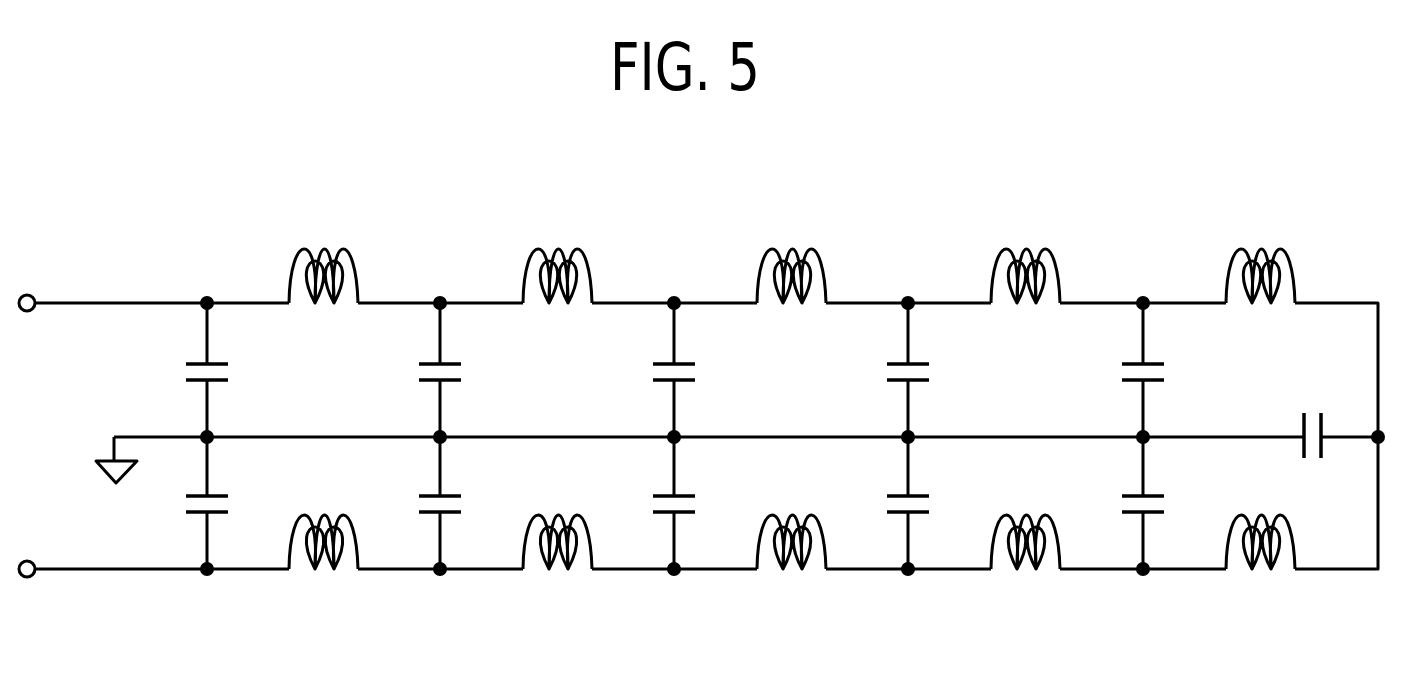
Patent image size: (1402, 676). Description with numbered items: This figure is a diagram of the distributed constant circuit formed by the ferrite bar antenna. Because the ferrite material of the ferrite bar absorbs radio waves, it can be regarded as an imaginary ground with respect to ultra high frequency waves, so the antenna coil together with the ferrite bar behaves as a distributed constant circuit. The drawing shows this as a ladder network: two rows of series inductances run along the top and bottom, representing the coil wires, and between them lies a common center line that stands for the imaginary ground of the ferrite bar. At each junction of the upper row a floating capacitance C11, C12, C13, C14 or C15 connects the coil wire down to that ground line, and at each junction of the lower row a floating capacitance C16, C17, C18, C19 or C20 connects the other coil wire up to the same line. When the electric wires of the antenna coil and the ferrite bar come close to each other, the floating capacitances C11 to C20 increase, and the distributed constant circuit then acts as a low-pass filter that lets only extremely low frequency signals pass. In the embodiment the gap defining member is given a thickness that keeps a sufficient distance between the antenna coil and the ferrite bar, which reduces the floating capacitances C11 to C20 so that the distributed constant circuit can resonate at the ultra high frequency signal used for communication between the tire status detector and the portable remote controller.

The floating capacitance C11 is at (181, 373).
The floating capacitance C12 is at (414, 373).
The floating capacitance C13 is at (648, 373).
The floating capacitance C14 is at (882, 373).
The floating capacitance C15 is at (1117, 373).
The floating capacitance C16 is at (181, 506).
The floating capacitance C17 is at (414, 506).
The floating capacitance C18 is at (648, 506).
The floating capacitance C19 is at (882, 506).
The floating capacitance C20 is at (1117, 506).